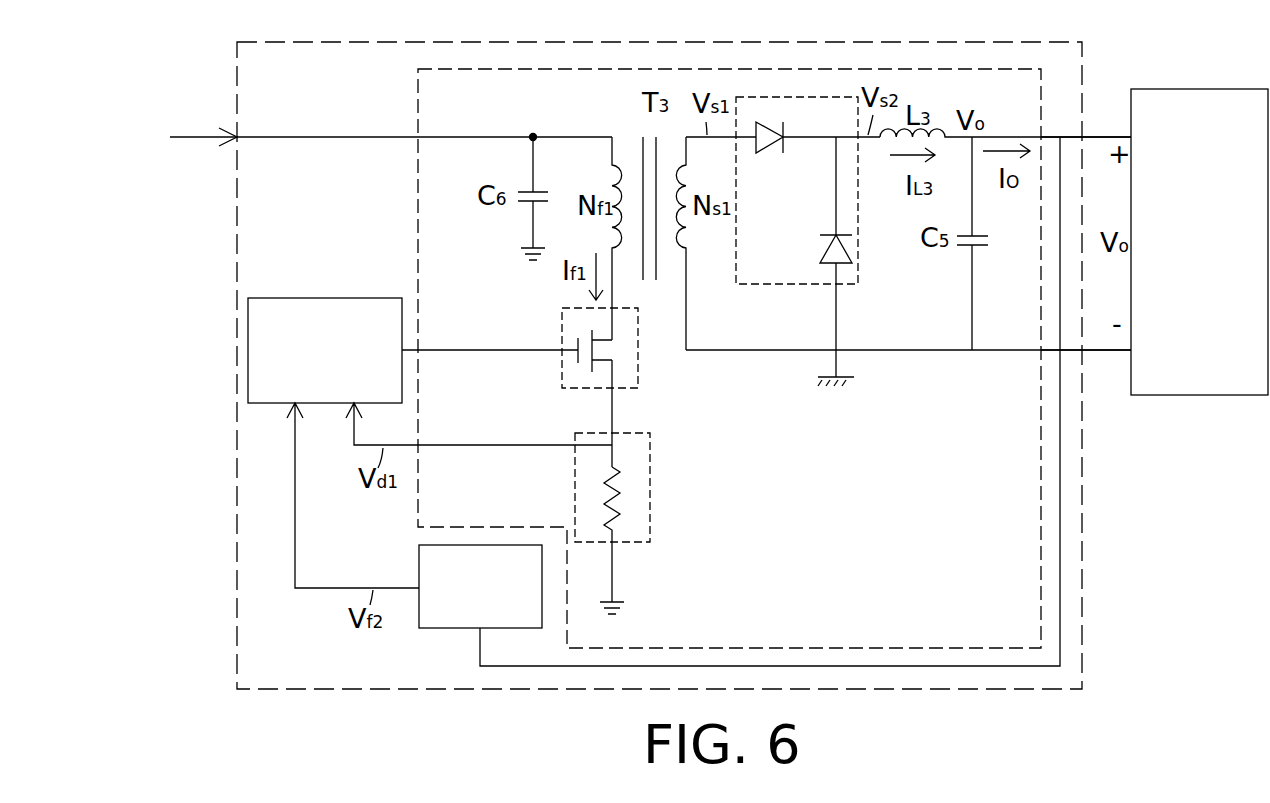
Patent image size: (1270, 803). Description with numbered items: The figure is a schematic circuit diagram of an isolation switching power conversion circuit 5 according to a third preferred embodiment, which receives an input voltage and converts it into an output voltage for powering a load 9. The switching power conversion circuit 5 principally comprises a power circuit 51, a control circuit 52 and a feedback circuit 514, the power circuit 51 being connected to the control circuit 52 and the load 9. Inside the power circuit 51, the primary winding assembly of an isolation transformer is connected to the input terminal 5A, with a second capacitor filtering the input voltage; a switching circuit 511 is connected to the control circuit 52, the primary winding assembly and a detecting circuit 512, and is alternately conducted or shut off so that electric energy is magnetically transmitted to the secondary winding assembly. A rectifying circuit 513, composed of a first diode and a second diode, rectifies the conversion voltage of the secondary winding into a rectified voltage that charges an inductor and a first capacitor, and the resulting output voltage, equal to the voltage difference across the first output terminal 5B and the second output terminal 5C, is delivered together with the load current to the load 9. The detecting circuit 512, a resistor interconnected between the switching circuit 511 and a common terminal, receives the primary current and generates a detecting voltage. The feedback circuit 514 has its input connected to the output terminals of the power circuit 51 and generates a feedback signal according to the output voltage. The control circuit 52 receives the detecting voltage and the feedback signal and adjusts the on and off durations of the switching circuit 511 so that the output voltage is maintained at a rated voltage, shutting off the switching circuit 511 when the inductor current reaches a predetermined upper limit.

The switching power conversion circuit 5 is at (885, 42).
The input terminal 5A is at (237, 137).
The first output terminal 5B is at (1082, 137).
The second output terminal 5C is at (1082, 352).
The load 9 is at (1230, 89).
The power circuit 51 is at (418, 100).
The control circuit 52 is at (366, 298).
The switching circuit 511 is at (562, 322).
The detecting circuit 512 is at (575, 487).
The rectifying circuit 513 is at (771, 284).
The feedback circuit 514 is at (442, 628).